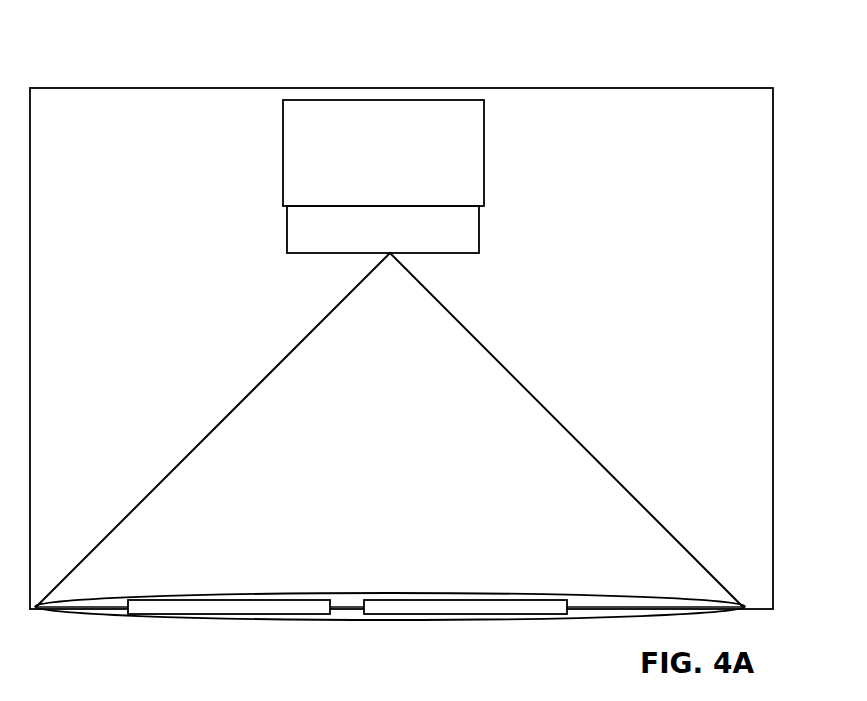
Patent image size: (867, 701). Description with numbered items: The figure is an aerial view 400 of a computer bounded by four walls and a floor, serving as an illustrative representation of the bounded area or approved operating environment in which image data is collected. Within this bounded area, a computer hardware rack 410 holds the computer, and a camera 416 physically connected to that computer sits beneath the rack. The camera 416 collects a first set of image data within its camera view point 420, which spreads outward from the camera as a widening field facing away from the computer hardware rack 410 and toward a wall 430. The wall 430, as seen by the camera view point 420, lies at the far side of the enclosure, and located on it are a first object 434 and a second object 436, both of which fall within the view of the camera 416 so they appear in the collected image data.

The aerial view 400 is at (585, 80).
The computer hardware rack 410 is at (480, 125).
The camera 416 is at (473, 231).
The camera view point 420 is at (369, 341).
The wall 430 is at (112, 599).
The first object 434 is at (232, 599).
The second object 436 is at (467, 599).